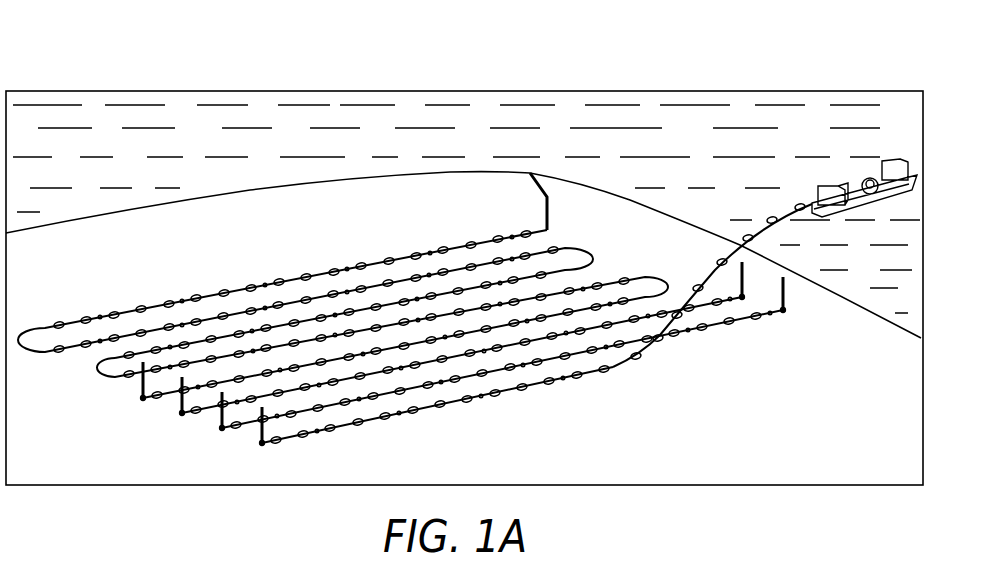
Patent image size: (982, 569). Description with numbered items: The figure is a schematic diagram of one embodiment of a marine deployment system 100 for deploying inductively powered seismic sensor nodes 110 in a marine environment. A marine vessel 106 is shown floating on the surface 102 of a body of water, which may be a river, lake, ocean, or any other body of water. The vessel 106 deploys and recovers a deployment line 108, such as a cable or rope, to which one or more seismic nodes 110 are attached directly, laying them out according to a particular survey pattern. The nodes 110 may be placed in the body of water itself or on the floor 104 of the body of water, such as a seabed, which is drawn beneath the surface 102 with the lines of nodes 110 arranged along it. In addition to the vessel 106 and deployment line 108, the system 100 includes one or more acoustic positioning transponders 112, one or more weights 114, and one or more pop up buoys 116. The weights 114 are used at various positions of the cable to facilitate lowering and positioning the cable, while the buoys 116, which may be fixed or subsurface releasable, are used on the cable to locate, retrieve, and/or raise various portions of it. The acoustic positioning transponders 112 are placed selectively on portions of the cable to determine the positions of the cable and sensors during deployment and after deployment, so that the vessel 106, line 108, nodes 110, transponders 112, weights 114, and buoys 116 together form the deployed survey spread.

The marine deployment system 100 is at (135, 70).
The surface of a body of water 102 is at (730, 138).
The floor of the body of water 104 is at (372, 197).
The marine vessel 106 is at (883, 162).
The deployment line 108 is at (783, 213).
The seismic sensor node 110 is at (462, 400).
The acoustic positioning transponder 112 is at (142, 310).
The weight 114 is at (155, 398).
The pop up buoy 116 is at (530, 173).